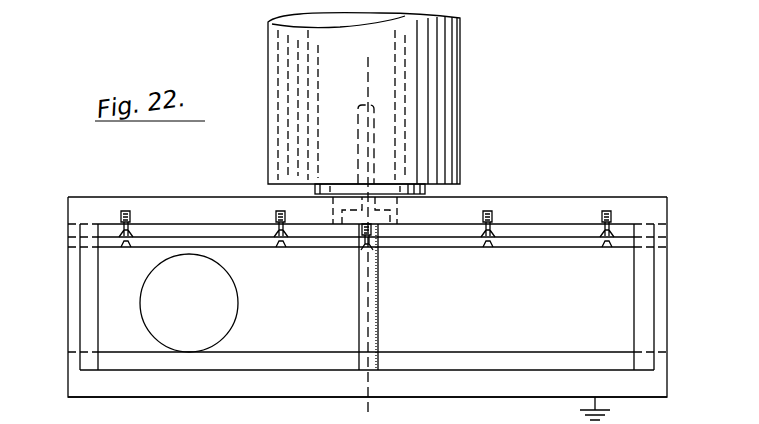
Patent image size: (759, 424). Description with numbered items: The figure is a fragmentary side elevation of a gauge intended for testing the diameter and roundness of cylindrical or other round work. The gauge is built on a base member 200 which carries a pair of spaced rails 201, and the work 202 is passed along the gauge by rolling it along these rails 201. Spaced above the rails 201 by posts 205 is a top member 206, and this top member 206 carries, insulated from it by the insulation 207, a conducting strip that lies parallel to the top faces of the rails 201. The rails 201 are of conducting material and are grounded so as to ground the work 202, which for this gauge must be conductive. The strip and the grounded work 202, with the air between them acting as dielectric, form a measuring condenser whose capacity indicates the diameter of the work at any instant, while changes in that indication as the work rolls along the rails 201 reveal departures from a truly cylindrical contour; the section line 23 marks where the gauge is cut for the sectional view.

The section line 23- 23 is at (368, 57).
The base plate 200 is at (656, 382).
The housing frame 201 is at (526, 358).
The circular opening 202 is at (222, 310).
The support posts 205 is at (90, 296).
The top cover plate 206 is at (517, 198).
The mounting plate 207 is at (566, 228).